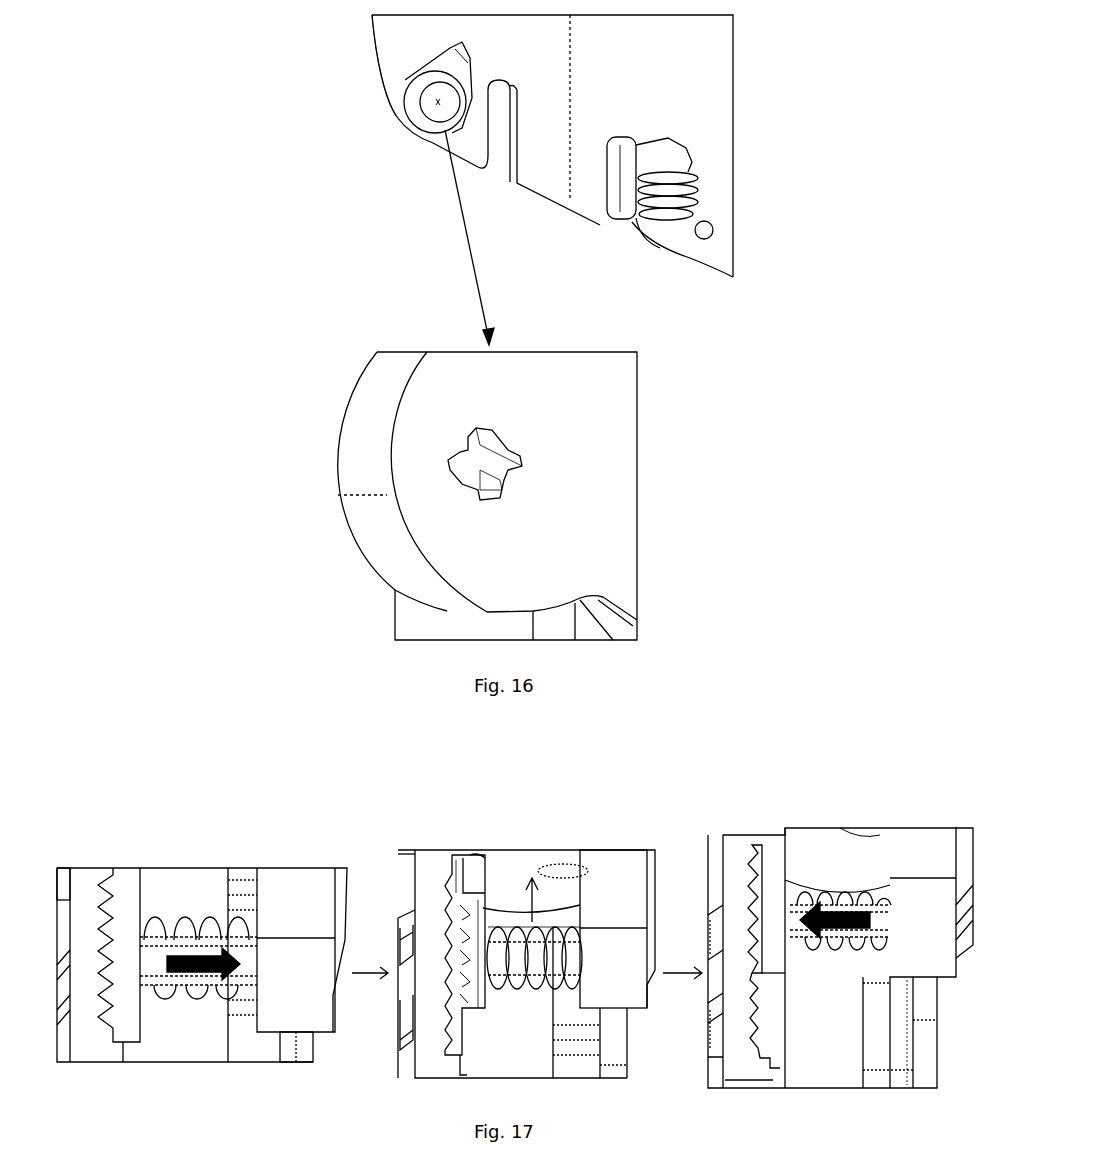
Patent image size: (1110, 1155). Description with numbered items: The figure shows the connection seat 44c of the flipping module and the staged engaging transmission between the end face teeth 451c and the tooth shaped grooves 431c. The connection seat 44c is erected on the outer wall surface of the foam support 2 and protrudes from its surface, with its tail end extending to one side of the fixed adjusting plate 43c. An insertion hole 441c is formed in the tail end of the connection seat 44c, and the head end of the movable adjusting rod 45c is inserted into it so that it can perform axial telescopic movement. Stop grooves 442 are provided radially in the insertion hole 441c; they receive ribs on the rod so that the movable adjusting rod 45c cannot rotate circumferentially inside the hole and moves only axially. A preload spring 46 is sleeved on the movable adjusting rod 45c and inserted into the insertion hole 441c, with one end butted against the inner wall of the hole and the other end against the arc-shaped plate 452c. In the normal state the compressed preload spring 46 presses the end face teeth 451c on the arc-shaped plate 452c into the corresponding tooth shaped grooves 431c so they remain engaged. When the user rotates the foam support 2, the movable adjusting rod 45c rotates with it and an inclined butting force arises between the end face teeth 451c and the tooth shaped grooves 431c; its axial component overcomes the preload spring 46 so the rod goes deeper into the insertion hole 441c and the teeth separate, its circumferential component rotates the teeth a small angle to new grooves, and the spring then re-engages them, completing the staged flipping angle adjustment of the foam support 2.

In FIG. 16, the foam support 2 is at (583, 190).
In FIG. 16, the connection seat 44c is at (638, 202).
In FIG. 17, the connection seat 44c is at (605, 953).
In FIG. 16, the insertion hole 441c is at (487, 478).
In FIG. 16, the stop groove 442 is at (487, 437).
In FIG. 17, the fixed adjusting plate 43c is at (435, 873).
In FIG. 17, the tooth shaped grooves 431c is at (447, 917).
In FIG. 17, the end face teeth 451c is at (459, 910).
In FIG. 17, the arc-shaped plate 452c is at (478, 912).
In FIG. 17, the preload spring 46 is at (512, 930).
In FIG. 17, the movable adjusting rod 45c is at (550, 953).